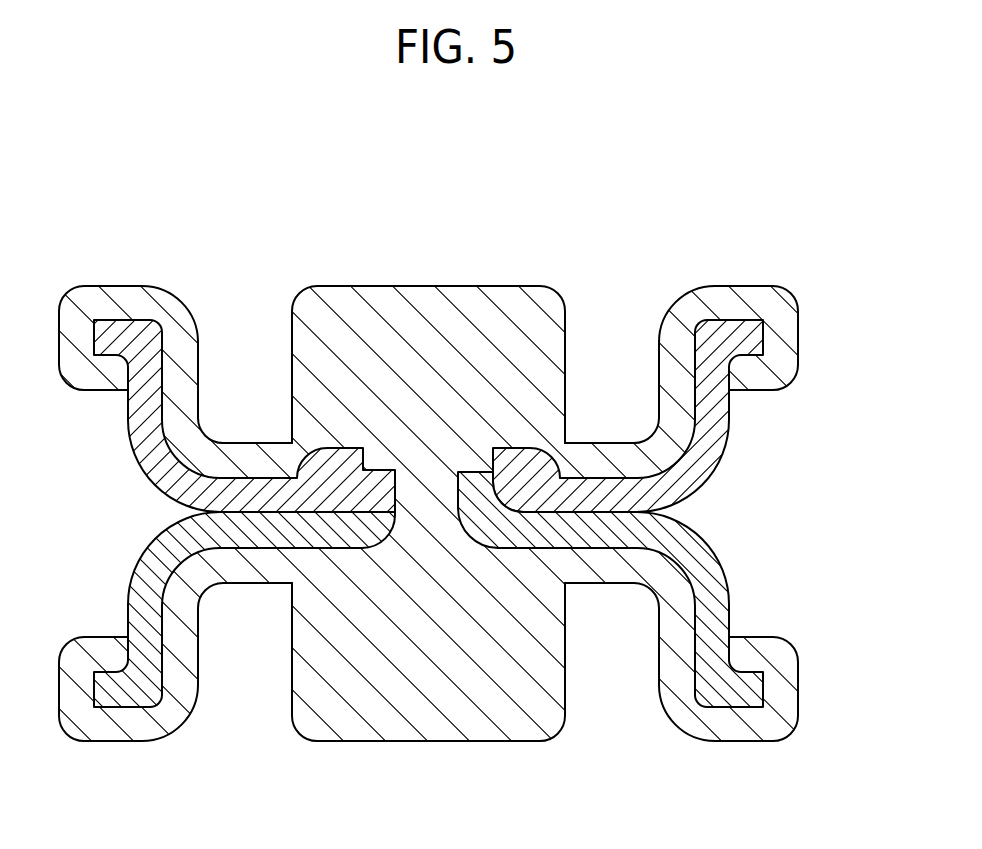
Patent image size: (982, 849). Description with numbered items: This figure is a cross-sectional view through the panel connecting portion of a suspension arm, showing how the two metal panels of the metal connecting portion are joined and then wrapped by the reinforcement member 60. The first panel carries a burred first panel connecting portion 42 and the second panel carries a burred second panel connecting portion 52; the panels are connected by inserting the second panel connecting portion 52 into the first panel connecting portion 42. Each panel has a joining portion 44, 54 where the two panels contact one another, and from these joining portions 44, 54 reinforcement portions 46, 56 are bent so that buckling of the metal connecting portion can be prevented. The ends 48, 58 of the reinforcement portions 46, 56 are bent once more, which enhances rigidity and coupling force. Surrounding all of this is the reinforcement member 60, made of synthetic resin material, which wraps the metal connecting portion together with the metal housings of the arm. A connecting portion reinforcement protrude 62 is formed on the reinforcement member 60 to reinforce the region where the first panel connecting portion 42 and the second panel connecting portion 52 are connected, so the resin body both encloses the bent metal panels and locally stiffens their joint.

The first panel connecting portion 42 is at (510, 447).
The joining portion 44 is at (615, 477).
The reinforcement portion 46 is at (724, 443).
The end 48 is at (764, 333).
The second panel connecting portion 52 is at (480, 535).
The joining portion 54 is at (612, 546).
The reinforcement portion 56 is at (723, 582).
The end 58 is at (764, 690).
The reinforcement member 60 is at (125, 746).
The connecting portion reinforcement protrude 62 is at (358, 733).